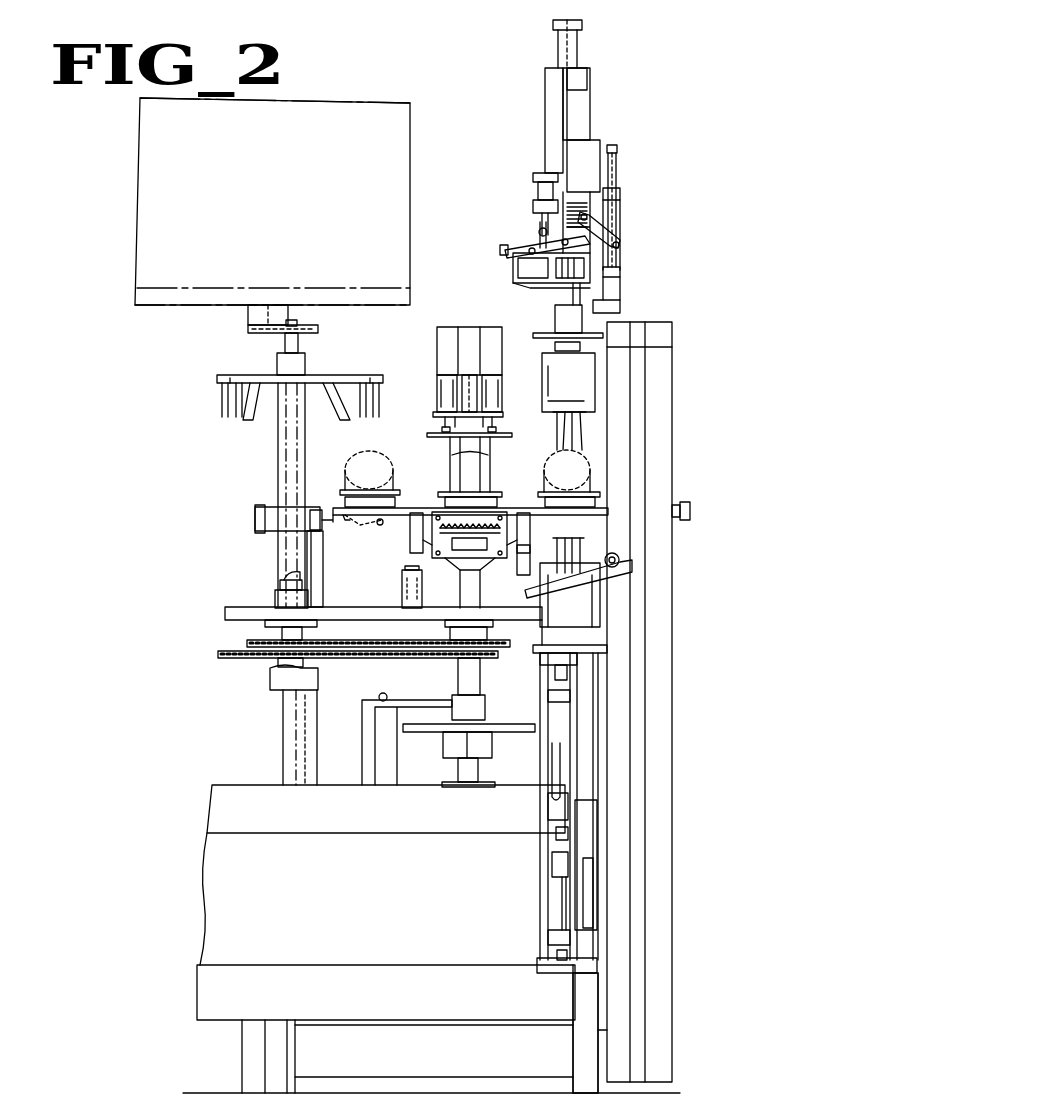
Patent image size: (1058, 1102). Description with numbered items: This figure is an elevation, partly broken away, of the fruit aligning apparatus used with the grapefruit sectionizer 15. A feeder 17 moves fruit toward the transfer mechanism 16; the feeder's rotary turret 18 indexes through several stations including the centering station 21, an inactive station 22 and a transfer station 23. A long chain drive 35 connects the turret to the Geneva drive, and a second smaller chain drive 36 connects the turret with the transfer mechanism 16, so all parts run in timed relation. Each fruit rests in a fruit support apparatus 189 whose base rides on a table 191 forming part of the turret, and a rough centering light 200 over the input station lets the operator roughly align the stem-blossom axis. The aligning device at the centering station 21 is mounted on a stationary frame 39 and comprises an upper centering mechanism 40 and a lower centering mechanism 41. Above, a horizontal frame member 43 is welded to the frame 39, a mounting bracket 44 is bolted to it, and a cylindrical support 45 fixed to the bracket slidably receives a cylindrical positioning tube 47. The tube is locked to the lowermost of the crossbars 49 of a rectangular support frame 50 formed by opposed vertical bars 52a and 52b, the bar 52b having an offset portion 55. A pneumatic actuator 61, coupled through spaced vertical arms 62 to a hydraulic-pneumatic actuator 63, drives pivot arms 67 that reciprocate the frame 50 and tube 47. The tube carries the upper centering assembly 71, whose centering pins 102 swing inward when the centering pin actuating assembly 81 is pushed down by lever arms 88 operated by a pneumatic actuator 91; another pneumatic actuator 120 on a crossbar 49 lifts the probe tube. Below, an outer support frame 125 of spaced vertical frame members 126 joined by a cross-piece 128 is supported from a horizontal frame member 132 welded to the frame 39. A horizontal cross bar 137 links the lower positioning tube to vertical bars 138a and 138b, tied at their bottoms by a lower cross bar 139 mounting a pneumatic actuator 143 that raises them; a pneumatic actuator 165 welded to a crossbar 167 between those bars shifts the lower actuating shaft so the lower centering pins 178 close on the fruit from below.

The grapefruit sectionizer 15 is at (136, 130).
The transfer mechanism 16 is at (213, 378).
The feeder 17 is at (425, 80).
The rotary turret 18 is at (338, 506).
The centering or aligning station 21 is at (610, 498).
The inactive station 22 is at (500, 488).
The transfer station 23 is at (352, 478).
The long chain drive 35 is at (240, 658).
The second smaller chain drive 36 is at (282, 636).
The stationary frame 39 is at (640, 478).
The upper centering mechanism 40 is at (586, 227).
The lower centering mechanism 41 is at (602, 840).
The horizontal frame member 43 is at (612, 346).
The mounting bracket 44 is at (600, 335).
The cylindrical support 45 is at (555, 317).
The cylindrical positioning tube 47 is at (560, 295).
The crossbars 49 is at (582, 84).
The rectangular support frame 50 is at (545, 130).
The lefthand vertical bar 52a is at (545, 100).
The righthand vertical bar 52b is at (580, 103).
The offset portion 55 is at (600, 142).
The pneumatic actuator 61 is at (618, 296).
The spaced vertical arms 62 is at (613, 210).
The hydraulic-pneumatic actuator 63 is at (617, 165).
The pivot arms 67 is at (620, 238).
The upper centering assembly 71 is at (600, 390).
The centering pin actuating assembly 81 is at (500, 245).
The elongated lever arms 88 is at (540, 233).
The pneumatic actuator 91 is at (538, 187).
The elongated centering fingers or pins 102 is at (582, 442).
The pneumatic actuator 120 is at (556, 47).
The outer support frame 125 is at (578, 862).
The spaced vertical frame members 126 is at (580, 935).
The cross-piece 128 is at (565, 975).
The horizontal frame member 132 is at (585, 648).
The horizontal cross bar 137 is at (562, 737).
The lefthand vertical bar 138a is at (550, 880).
The righthand vertical bar 138b is at (582, 873).
The lower cross bar 139 is at (548, 940).
The pneumatic actuator 143 is at (560, 905).
The pneumatic actuator 165 is at (558, 846).
The crossbar 167 is at (550, 812).
The elongated centering pins 178 is at (560, 547).
The fruit support apparatus 189 is at (383, 480).
The table 191 is at (375, 524).
The rough centering light 200 is at (437, 342).